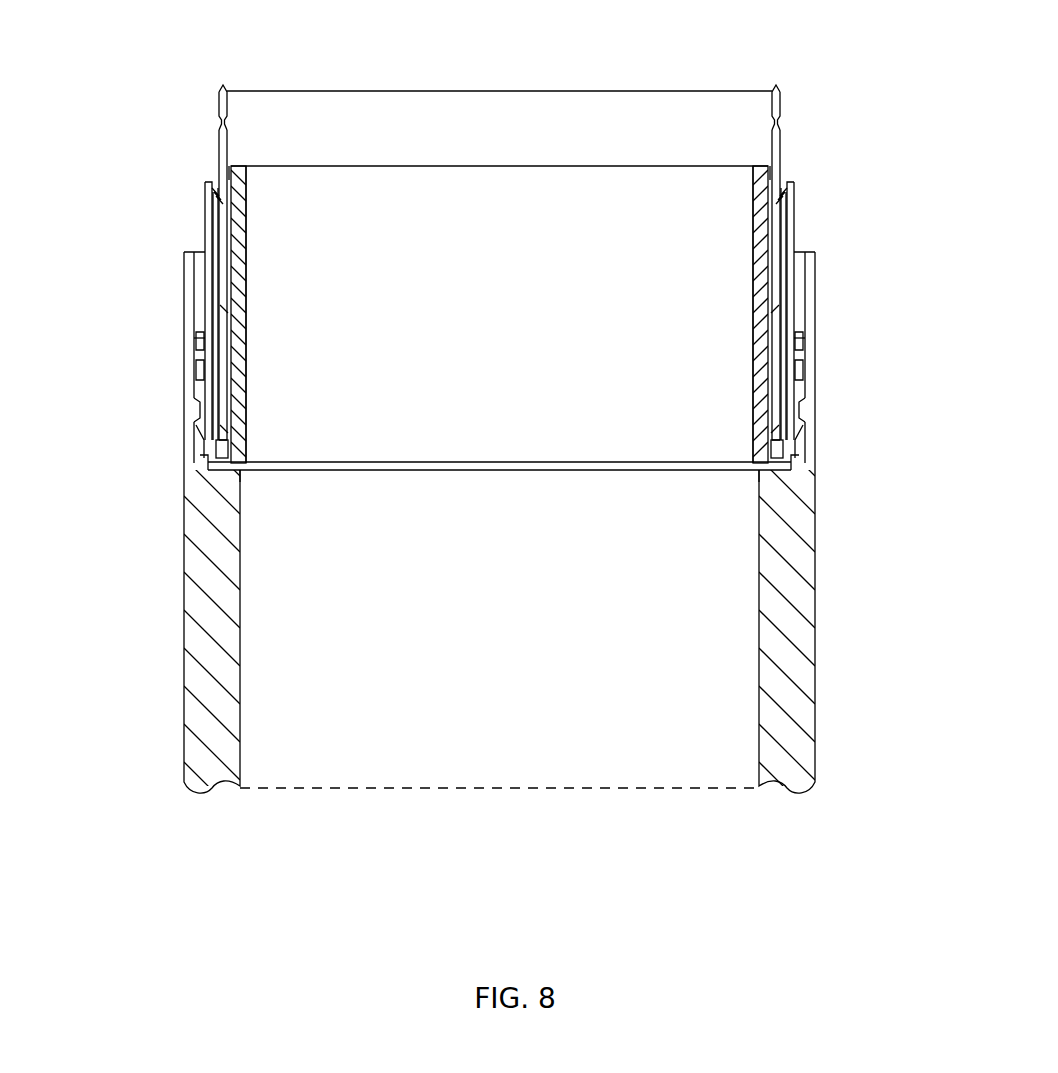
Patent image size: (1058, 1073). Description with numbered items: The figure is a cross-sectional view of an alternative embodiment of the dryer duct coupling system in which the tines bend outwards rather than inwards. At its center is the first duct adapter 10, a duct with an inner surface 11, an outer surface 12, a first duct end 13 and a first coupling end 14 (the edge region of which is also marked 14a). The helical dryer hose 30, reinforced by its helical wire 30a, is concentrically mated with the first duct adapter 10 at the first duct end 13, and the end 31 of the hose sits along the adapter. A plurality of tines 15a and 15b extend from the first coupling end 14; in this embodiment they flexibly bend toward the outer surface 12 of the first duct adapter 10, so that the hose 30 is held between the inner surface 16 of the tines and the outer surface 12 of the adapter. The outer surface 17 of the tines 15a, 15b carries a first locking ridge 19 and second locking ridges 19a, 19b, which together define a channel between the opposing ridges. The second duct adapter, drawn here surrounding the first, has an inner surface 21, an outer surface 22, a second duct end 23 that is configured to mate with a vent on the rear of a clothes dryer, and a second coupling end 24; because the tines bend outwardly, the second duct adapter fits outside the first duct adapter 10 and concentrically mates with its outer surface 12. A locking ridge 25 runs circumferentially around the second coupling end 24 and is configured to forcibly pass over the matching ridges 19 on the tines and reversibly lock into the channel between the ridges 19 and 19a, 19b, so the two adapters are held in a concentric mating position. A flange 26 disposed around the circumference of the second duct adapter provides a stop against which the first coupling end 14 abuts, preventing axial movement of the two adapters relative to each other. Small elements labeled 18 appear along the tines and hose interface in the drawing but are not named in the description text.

The first duct adapter 10 is at (248, 283).
The inner surface 11 is at (248, 235).
The outer surface 12 is at (248, 205).
The first duct end 13 is at (232, 166).
The first coupling end 14 is at (236, 468).
The base plate edge 14a is at (202, 458).
The tine 15a is at (192, 338).
The tine 15b is at (807, 338).
The inner surface of the plurality of tines 16 is at (209, 182).
The outer surface of the plurality of tines 17 is at (207, 200).
The sealing element 18 is at (236, 192).
The first locking ridge 19 is at (198, 430).
The second locking ridge 19a is at (813, 257).
The second locking ridge 19b is at (186, 257).
The inner surface 21 is at (200, 342).
The outer surface 22 is at (196, 378).
The second duct end 23 is at (806, 768).
The second coupling end 24 is at (200, 250).
The locking ridge 25 is at (194, 408).
The flange 26 is at (228, 475).
The helical dryer hose 30 is at (224, 74).
The helical wire 30a is at (228, 122).
The end of the helical dryer hose duct 31 is at (228, 448).